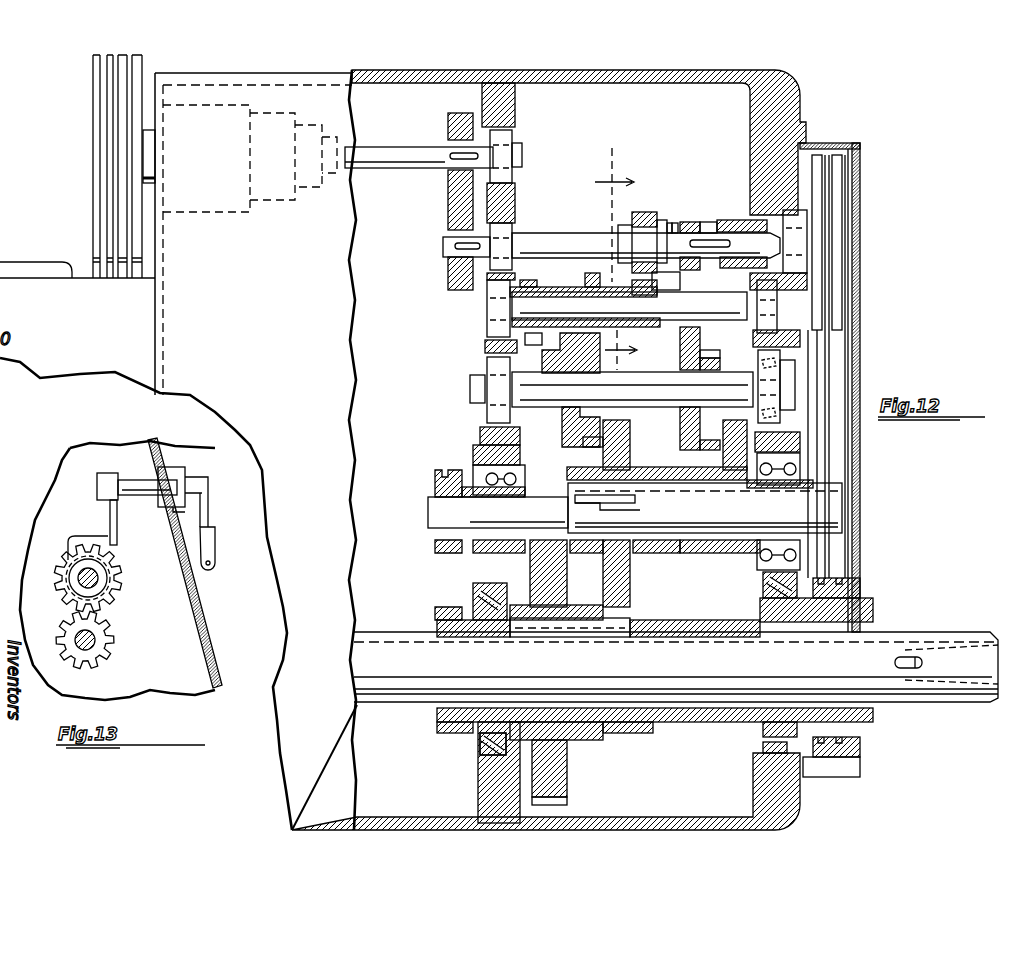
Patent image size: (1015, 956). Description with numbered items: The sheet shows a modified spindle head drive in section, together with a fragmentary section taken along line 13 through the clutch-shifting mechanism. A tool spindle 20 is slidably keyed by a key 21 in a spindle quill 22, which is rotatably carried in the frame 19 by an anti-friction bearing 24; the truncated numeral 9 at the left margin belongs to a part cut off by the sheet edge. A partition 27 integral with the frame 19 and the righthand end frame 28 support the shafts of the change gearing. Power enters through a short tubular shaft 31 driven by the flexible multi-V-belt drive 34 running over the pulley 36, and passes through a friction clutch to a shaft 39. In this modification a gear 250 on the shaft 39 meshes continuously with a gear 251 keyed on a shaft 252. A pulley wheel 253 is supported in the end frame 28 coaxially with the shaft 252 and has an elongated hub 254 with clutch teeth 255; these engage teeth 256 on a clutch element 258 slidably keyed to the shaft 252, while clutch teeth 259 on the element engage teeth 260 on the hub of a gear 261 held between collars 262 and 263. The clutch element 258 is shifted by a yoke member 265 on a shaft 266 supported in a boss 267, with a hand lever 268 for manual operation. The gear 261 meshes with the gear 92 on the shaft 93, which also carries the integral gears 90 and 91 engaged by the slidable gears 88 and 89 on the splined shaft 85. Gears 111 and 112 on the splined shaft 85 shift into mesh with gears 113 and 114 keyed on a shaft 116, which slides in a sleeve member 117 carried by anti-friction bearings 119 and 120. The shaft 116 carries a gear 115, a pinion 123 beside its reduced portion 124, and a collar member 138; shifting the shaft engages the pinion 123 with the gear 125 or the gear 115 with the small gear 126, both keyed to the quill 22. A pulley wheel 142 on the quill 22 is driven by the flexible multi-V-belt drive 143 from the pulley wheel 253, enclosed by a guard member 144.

In FIG. 12, the shaft 9 is at (36, 254).
In FIG. 12, the section line 13 is at (611, 257).
In FIG. 12, the frame 19 is at (428, 80).
In FIG. 13, the frame 19 is at (200, 590).
In FIG. 12, the tool spindle 20 is at (702, 697).
In FIG. 12, the key 21 is at (513, 630).
In FIG. 12, the spindle quill 22 is at (728, 720).
In FIG. 12, the anti-friction bearing 24 is at (785, 605).
In FIG. 12, the partition 27 is at (478, 787).
In FIG. 12, the end frame 28 is at (800, 102).
In FIG. 12, the tubular shaft 31 is at (150, 146).
In FIG. 12, the flexible multi-V-belt drive 34 is at (93, 207).
In FIG. 12, the pulley 36 is at (108, 236).
In FIG. 12, the shaft 39 is at (390, 168).
In FIG. 12, the splined shaft 85 is at (666, 403).
In FIG. 12, the gear 88 is at (565, 432).
In FIG. 12, the gear 89 is at (585, 445).
In FIG. 12, the gear 90 is at (545, 288).
In FIG. 12, the gear 91 is at (585, 284).
In FIG. 12, the gear 92 is at (593, 353).
In FIG. 13, the gear 92 is at (102, 640).
In FIG. 12, the shaft 93 is at (690, 302).
In FIG. 13, the shaft 93 is at (95, 655).
In FIG. 12, the gear 111 is at (700, 338).
In FIG. 12, the gear 112 is at (720, 360).
In FIG. 12, the gear 113 is at (668, 465).
In FIG. 12, the gear 114 is at (722, 445).
In FIG. 12, the gear 115 is at (630, 568).
In FIG. 12, the shaft 116 is at (830, 510).
In FIG. 12, the sleeve member 117 is at (474, 583).
In FIG. 12, the anti-friction bearing 119 is at (478, 458).
In FIG. 12, the anti-friction bearing 120 is at (803, 457).
In FIG. 12, the pinion 123 is at (622, 499).
In FIG. 12, the reduced portion 124 is at (548, 505).
In FIG. 12, the gear 125 is at (568, 788).
In FIG. 12, the small gear 126 is at (640, 732).
In FIG. 12, the collar member 138 is at (436, 487).
In FIG. 12, the pulley wheel 142 is at (856, 671).
In FIG. 12, the flexible multi-V-belt drive 143 is at (848, 380).
In FIG. 12, the guard member 144 is at (860, 283).
In FIG. 12, the gear 250 is at (456, 185).
In FIG. 12, the gear 251 is at (462, 292).
In FIG. 12, the shaft 252 is at (558, 236).
In FIG. 13, the shaft 252 is at (100, 585).
In FIG. 12, the pulley wheel 253 is at (860, 160).
In FIG. 12, the elongated hub 254 is at (727, 222).
In FIG. 12, the clutch teeth 255 is at (695, 283).
In FIG. 12, the clutch teeth 256 is at (705, 222).
In FIG. 12, the clutch element 258 is at (694, 222).
In FIG. 12, the clutch teeth 259 is at (674, 222).
In FIG. 12, the clutch teeth 260 is at (662, 222).
In FIG. 12, the gear 261 is at (644, 215).
In FIG. 13, the gear 261 is at (122, 580).
In FIG. 12, the collar 262 is at (624, 233).
In FIG. 12, the collar 263 is at (668, 222).
In FIG. 13, the yoke member 265 is at (113, 543).
In FIG. 13, the shaft 266 is at (140, 496).
In FIG. 13, the boss 267 is at (180, 468).
In FIG. 13, the hand lever 268 is at (210, 553).